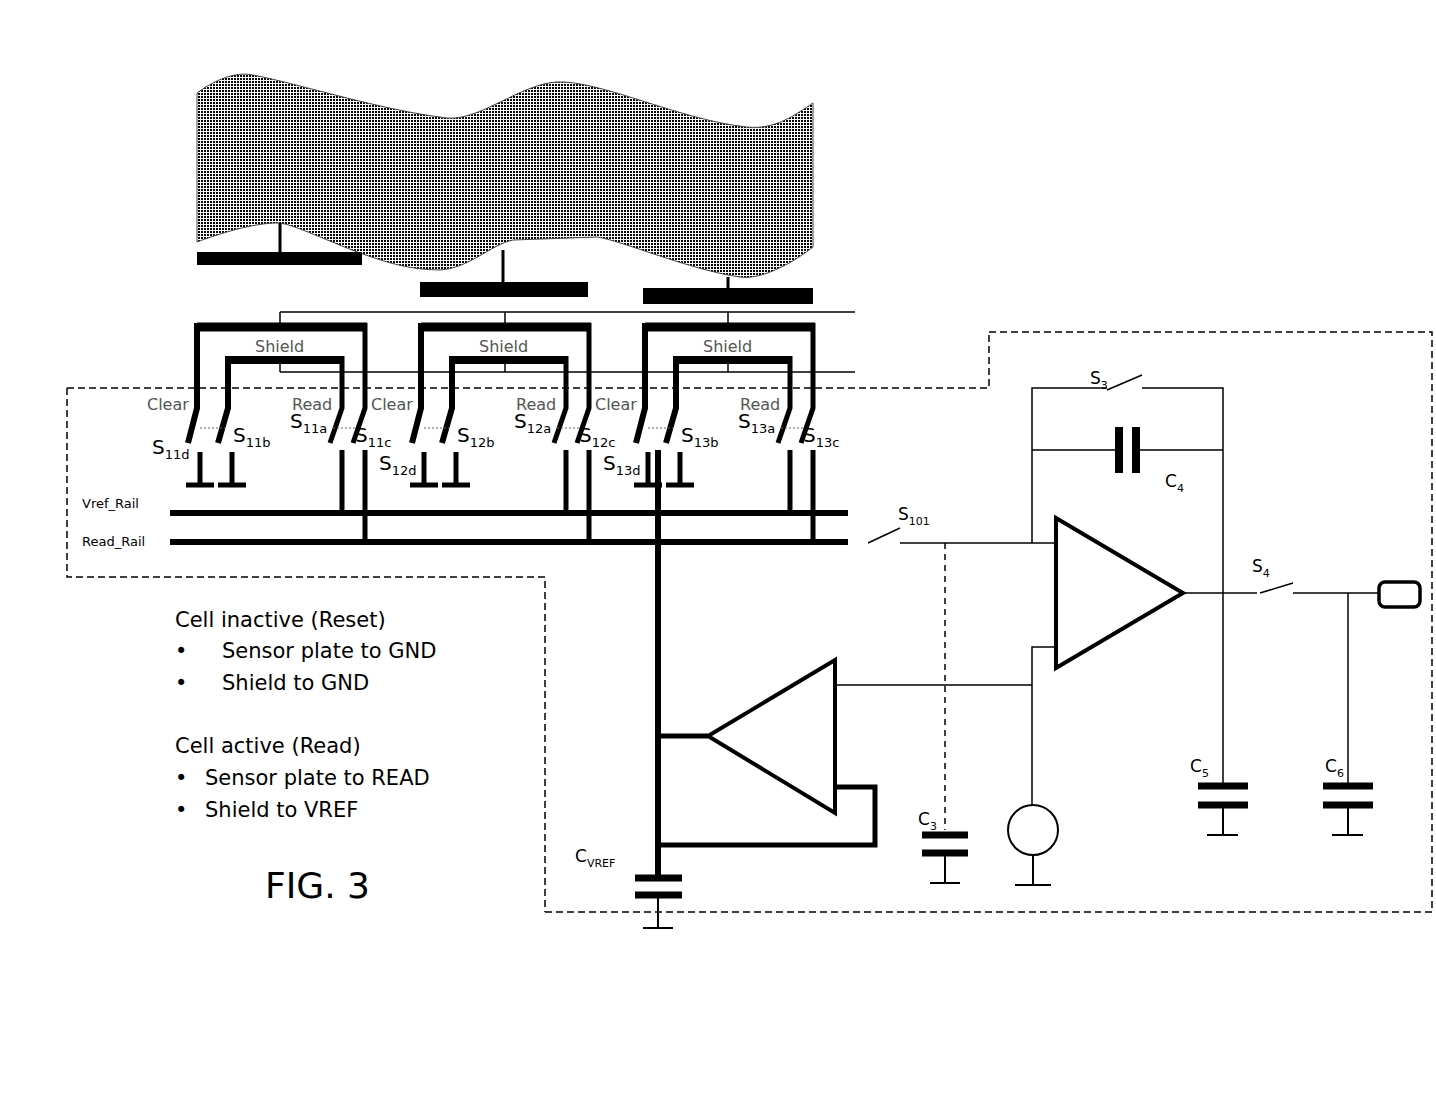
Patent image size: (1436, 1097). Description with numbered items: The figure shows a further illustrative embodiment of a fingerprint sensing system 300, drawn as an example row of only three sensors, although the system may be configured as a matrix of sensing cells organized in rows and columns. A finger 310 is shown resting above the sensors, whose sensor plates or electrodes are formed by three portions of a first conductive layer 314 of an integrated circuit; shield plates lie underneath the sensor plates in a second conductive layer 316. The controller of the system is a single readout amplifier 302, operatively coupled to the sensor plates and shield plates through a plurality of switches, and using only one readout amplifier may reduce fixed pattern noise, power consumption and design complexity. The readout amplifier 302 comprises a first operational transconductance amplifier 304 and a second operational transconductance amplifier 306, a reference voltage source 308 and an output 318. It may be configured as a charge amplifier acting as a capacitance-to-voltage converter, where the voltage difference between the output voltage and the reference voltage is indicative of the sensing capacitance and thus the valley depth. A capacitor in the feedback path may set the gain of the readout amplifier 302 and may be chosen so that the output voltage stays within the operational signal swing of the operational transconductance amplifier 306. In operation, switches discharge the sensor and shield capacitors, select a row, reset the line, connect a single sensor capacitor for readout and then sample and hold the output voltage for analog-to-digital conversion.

The fingerprint sensing system 300 is at (1093, 204).
The readout amplifier 302 is at (1187, 332).
The first operational transconductance amplifier 304 is at (770, 702).
The second operational transconductance amplifier 306 is at (1120, 637).
The reference voltage source 308 is at (1055, 845).
The finger 310 is at (815, 183).
The first conductive layer 314 is at (594, 317).
The second conductive layer 316 is at (594, 373).
The output 318 is at (1390, 581).